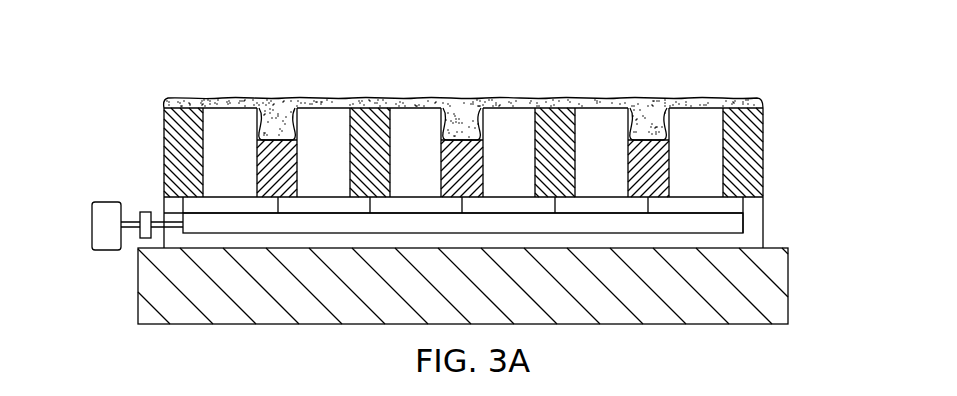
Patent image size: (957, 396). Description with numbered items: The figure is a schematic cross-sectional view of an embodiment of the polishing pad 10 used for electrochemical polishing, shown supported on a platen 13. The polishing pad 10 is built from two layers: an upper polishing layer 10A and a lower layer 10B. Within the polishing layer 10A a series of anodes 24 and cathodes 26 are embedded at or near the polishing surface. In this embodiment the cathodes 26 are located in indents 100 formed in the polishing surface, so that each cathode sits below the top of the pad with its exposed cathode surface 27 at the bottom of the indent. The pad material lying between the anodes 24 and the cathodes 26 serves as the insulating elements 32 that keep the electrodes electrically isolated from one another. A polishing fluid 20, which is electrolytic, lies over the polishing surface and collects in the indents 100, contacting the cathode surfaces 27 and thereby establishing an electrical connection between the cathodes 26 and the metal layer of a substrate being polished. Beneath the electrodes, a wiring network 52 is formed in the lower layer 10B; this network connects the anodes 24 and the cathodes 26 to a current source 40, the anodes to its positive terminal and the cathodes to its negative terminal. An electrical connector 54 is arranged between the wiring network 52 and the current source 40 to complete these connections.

The polishing pad 10 is at (830, 87).
The polishing layer 10A is at (764, 150).
The lower layer 10B is at (764, 222).
The platen 13 is at (789, 279).
The polishing fluid 20 is at (190, 98).
The anodes 24 is at (164, 128).
The cathodes 26 is at (267, 114).
The cathode surfaces 27 is at (292, 112).
The insulating elements 32 is at (216, 111).
The current source 40 is at (92, 227).
The wiring network 52 is at (600, 235).
The electrical connector 54 is at (145, 212).
The indents 100 is at (277, 118).